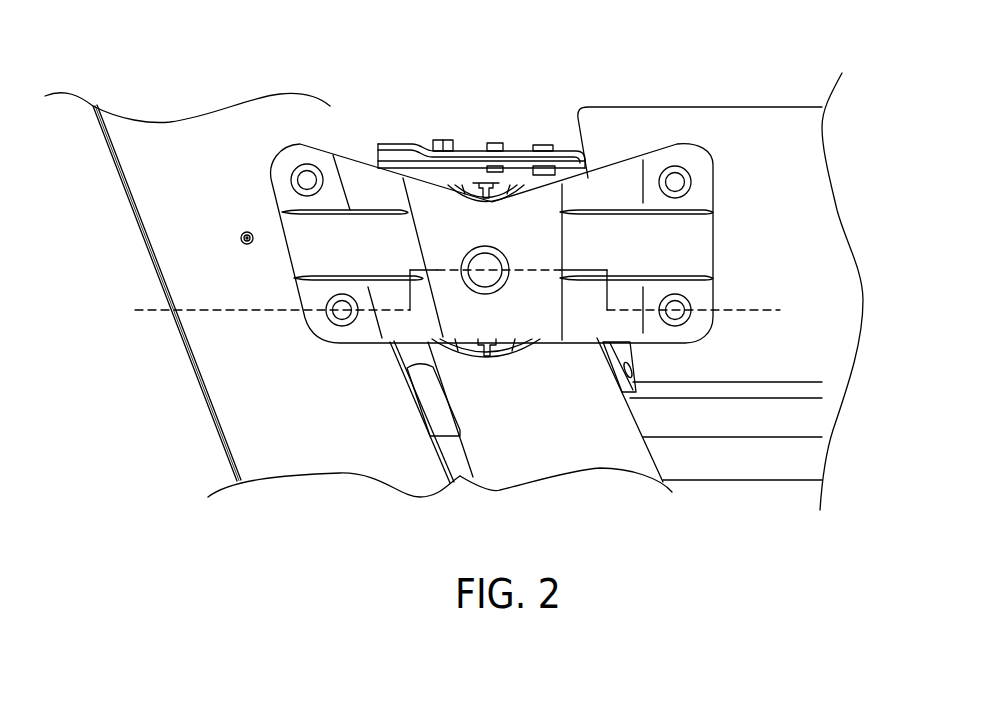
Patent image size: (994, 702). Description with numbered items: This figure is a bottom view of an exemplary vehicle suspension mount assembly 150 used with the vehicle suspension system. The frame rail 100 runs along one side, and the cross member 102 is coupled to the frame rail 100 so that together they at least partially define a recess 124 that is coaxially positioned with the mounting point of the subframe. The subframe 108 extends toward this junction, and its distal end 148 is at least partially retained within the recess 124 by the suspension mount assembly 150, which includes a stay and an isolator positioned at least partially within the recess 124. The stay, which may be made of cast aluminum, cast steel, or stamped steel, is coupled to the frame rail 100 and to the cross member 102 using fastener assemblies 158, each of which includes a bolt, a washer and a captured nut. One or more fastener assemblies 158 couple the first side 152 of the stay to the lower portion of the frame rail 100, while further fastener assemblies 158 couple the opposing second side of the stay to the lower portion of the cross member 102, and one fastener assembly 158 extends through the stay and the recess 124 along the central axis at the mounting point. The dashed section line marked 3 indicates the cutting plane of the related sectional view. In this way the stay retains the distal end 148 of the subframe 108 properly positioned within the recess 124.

The frame rail 100 is at (225, 393).
The cross member 102 is at (762, 140).
The subframe 108 is at (550, 460).
The recess 124 is at (527, 103).
The distal end 148 is at (455, 103).
The suspension mount assembly 150 is at (327, 54).
The first side 152 is at (585, 330).
The fastener assembly 158 is at (305, 180).
The section line 3- 3 is at (143, 286).